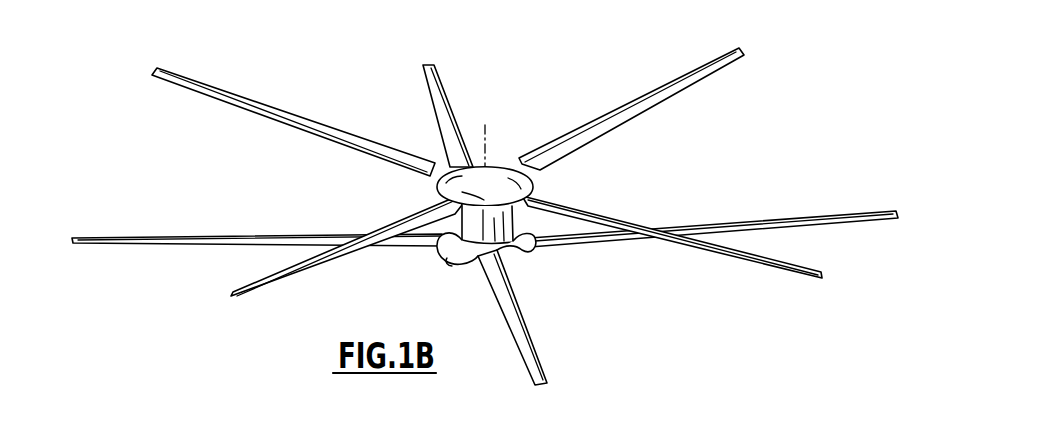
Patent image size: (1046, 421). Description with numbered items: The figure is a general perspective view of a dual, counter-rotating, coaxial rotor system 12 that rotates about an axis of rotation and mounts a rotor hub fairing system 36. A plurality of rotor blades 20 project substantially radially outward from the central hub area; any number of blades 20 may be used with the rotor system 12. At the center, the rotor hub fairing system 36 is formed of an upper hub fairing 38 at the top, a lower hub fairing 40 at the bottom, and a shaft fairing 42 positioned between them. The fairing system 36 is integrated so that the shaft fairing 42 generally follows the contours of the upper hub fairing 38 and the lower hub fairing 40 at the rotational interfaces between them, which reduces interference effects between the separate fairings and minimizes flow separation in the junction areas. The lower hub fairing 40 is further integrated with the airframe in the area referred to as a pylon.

The counter-rotating coaxial rotor system 12 is at (485, 204).
The rotor blades 20 is at (617, 115).
The rotor hub fairing system 36 is at (402, 195).
The upper hub fairing 38 is at (504, 166).
The lower hub fairing 40 is at (457, 257).
The shaft fairing 42 is at (527, 252).